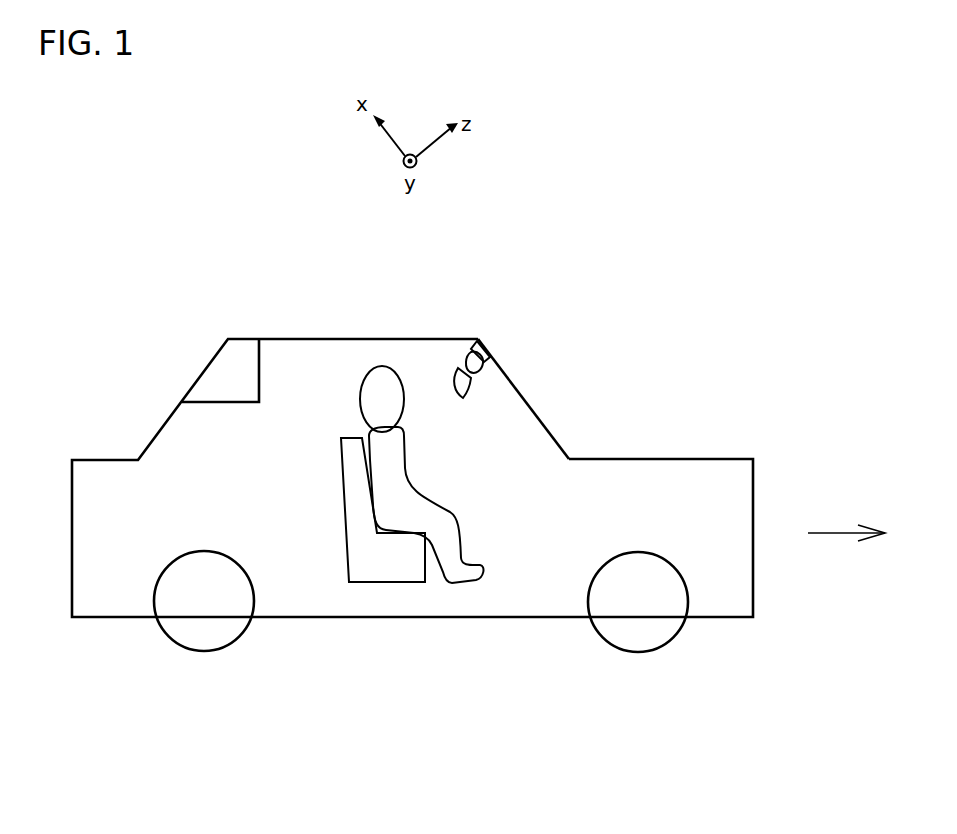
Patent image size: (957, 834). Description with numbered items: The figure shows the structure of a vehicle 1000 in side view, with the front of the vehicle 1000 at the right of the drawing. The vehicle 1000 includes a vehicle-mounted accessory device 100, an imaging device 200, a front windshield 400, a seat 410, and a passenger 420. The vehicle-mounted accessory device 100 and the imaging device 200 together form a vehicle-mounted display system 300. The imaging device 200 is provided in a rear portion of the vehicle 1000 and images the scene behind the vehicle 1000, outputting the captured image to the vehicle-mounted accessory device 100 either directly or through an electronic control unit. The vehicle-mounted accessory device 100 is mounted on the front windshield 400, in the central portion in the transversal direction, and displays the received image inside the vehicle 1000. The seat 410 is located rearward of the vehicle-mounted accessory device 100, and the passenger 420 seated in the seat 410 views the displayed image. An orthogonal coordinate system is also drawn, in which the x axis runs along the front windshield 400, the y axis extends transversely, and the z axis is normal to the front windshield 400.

The vehicle-mounted accessory device 100 is at (480, 338).
The imaging device 200 is at (230, 370).
The vehicle-mounted display system 300 is at (462, 259).
The front windshield 400 is at (528, 402).
The seat 410 is at (380, 567).
The passenger 420 is at (437, 522).
The vehicle 1000 is at (438, 795).